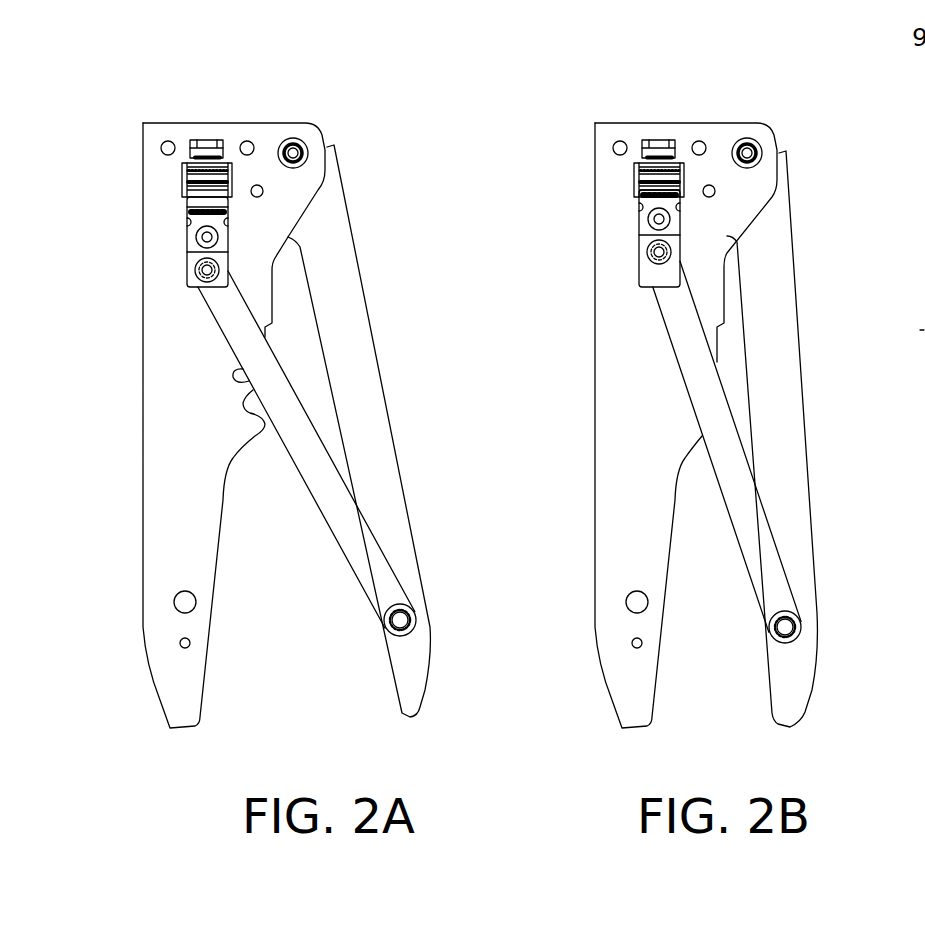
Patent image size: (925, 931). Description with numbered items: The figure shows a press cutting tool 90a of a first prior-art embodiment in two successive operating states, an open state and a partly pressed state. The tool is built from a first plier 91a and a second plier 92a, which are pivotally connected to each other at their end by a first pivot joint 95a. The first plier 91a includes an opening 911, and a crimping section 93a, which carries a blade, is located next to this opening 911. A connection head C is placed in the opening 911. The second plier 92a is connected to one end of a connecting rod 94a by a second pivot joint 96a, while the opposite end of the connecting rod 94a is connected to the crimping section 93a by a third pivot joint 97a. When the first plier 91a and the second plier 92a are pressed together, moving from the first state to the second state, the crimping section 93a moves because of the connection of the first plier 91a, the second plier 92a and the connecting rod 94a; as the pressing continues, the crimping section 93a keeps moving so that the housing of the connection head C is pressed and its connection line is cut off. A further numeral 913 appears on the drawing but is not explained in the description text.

In FIG. 2A, the crimping tool 90a is at (118, 105).
In FIG. 2B, the crimping tool 90a is at (570, 105).
In FIG. 2A, the fixed handle body 91a is at (152, 332).
In FIG. 2B, the fixed handle body 91a is at (604, 332).
In FIG. 2A, the crimping opening 911 is at (222, 128).
In FIG. 2B, the crimping opening 911 is at (674, 128).
In FIG. 2B, the guide groove 913 is at (911, 345).
In FIG. 2A, the movable handle 92a is at (375, 427).
In FIG. 2B, the movable handle 92a is at (795, 435).
In FIG. 2A, the pressing die block 93a is at (188, 222).
In FIG. 2B, the pressing die block 93a is at (640, 222).
In FIG. 2A, the link 94a is at (307, 488).
In FIG. 2B, the link 94a is at (732, 515).
In FIG. 2A, the pivot pin 95a is at (300, 148).
In FIG. 2B, the pivot pin 95a is at (752, 148).
In FIG. 2A, the pivot pin 96a is at (410, 610).
In FIG. 2B, the pivot pin 96a is at (795, 620).
In FIG. 2A, the pivot pin 97a is at (198, 270).
In FIG. 2B, the pivot pin 97a is at (650, 270).
In FIG. 2A, the connector C is at (187, 177).
In FIG. 2B, the connector C is at (639, 177).